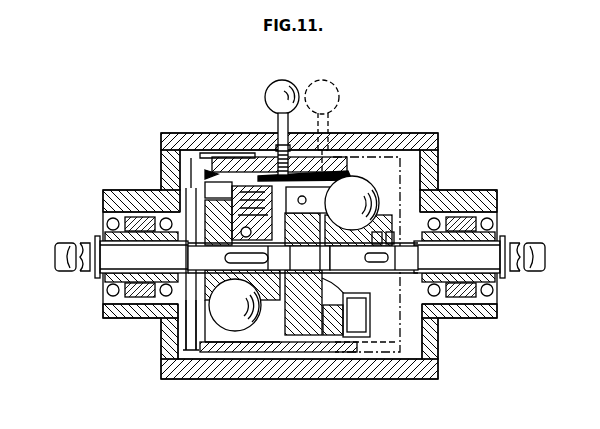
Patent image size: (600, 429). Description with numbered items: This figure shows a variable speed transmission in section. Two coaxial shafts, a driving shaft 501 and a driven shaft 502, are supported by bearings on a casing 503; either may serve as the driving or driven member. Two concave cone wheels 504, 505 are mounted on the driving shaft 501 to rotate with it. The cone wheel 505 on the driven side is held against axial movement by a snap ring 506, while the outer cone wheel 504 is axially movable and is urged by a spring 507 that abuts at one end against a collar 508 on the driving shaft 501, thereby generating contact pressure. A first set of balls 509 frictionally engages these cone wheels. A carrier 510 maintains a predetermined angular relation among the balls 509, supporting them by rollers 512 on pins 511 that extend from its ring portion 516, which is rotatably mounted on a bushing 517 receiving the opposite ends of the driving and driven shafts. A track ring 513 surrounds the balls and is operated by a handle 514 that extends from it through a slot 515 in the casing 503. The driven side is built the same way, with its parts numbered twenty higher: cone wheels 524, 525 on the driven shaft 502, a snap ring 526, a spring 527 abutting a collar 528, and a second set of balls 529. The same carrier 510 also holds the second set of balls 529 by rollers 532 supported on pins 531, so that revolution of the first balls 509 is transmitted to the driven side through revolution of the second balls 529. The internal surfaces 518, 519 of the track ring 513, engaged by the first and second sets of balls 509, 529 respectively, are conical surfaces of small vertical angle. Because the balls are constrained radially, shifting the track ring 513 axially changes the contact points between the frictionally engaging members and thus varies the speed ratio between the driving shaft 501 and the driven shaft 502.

The driving shaft 501 is at (96, 242).
The driven shaft 502 is at (494, 254).
The casing 503 is at (413, 144).
The concave cone wheel 504 is at (238, 215).
The concave cone wheel 505 is at (247, 232).
The snap ring 506 is at (259, 258).
The spring 507 is at (188, 290).
The collar 508 is at (182, 253).
The balls 509 is at (254, 313).
The carrier 510 is at (298, 318).
The pins 511 is at (240, 190).
The rollers 512 is at (212, 180).
The track ring 513 is at (256, 164).
The handle 514 is at (290, 120).
The slot 515 is at (320, 140).
The ring portion 516 is at (318, 166).
The bushing 517 is at (280, 292).
The internal surface 518 is at (213, 172).
The internal surface 519 is at (376, 156).
The concave cone wheel 524 is at (376, 290).
The concave cone wheel 525 is at (320, 292).
The snap ring 526 is at (374, 258).
The spring 527 is at (386, 236).
The collar 528 is at (420, 252).
The balls 529 is at (372, 211).
The pins 531 is at (360, 318).
The rollers 532 is at (380, 343).